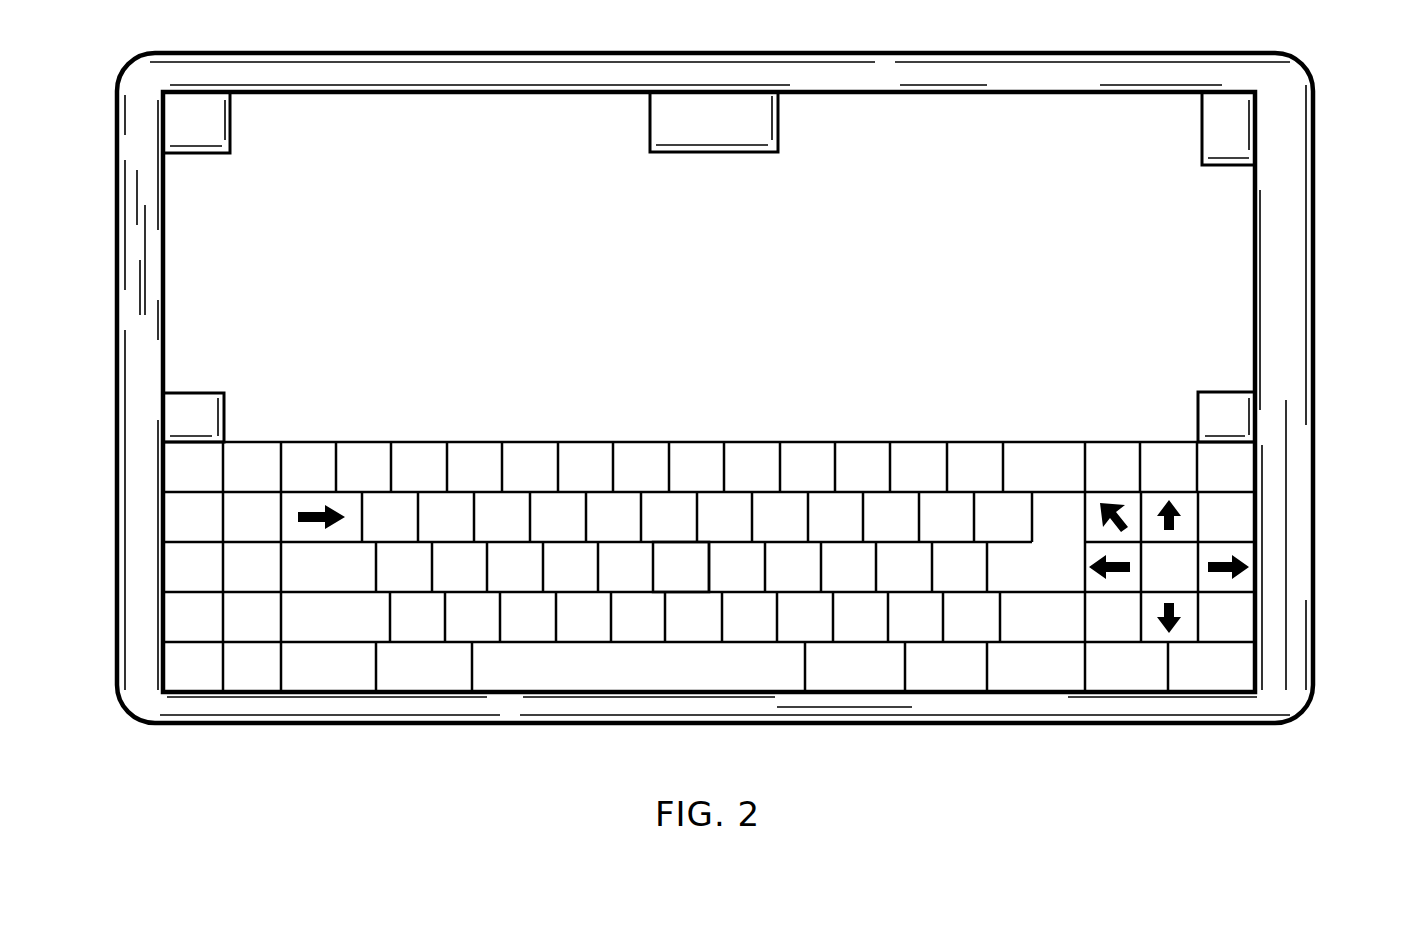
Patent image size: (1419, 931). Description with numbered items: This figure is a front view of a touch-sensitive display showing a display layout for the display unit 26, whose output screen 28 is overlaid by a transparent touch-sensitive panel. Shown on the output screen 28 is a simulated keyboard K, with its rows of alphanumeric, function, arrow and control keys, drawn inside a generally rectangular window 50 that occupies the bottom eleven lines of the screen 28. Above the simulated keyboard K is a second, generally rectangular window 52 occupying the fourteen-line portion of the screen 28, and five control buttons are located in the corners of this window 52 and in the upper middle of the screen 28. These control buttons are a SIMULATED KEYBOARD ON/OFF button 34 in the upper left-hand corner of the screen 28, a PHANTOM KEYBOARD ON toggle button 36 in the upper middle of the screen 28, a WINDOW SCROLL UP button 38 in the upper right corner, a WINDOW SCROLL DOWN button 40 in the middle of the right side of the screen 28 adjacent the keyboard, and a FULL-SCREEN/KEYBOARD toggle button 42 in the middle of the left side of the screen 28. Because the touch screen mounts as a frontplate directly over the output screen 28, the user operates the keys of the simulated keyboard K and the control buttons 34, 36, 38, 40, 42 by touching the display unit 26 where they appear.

The display unit 26 is at (1330, 331).
The output screen 28 is at (1228, 197).
The SIMULATED KEYBOARD ON/OFF button 34 is at (192, 128).
The PHANTOM KEYBOARD ON toggle button 36 is at (723, 118).
The WINDOW SCROLL UP button 38 is at (1232, 127).
The WINDOW SCROLL DOWN button 40 is at (1232, 418).
The FULL-SCREEN/KEYBOARD toggle button 42 is at (190, 416).
The rectangular window 50 is at (311, 441).
The rectangular window 52 is at (1040, 128).
The simulated keyboard K is at (690, 585).